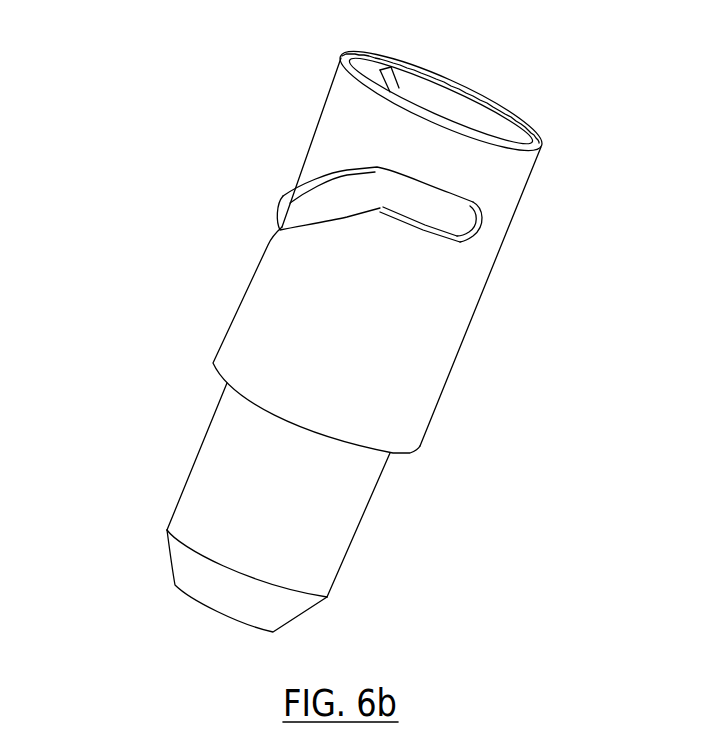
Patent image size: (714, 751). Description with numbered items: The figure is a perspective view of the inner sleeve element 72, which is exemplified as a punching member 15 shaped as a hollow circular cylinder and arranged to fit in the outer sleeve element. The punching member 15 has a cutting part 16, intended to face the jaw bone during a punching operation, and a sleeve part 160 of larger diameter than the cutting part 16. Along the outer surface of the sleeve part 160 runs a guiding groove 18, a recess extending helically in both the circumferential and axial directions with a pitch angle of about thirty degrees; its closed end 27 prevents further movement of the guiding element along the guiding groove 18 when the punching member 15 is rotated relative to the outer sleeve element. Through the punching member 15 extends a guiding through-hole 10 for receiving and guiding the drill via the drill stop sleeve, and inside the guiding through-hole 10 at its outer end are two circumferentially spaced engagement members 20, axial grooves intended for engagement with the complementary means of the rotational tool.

The guiding through-hole 10 is at (447, 110).
The punching member 15 is at (440, 353).
The cutting part 16 is at (315, 620).
The guiding groove 18 is at (307, 207).
The engagement member 20 is at (365, 57).
The closed end 27 is at (493, 214).
The inner sleeve element 72 is at (130, 299).
The sleeve part 160 is at (458, 399).